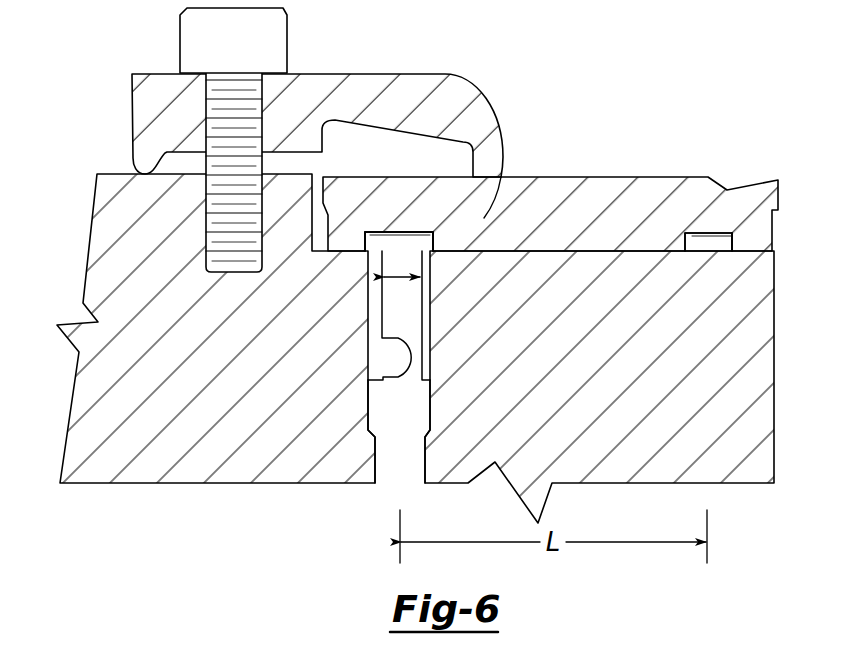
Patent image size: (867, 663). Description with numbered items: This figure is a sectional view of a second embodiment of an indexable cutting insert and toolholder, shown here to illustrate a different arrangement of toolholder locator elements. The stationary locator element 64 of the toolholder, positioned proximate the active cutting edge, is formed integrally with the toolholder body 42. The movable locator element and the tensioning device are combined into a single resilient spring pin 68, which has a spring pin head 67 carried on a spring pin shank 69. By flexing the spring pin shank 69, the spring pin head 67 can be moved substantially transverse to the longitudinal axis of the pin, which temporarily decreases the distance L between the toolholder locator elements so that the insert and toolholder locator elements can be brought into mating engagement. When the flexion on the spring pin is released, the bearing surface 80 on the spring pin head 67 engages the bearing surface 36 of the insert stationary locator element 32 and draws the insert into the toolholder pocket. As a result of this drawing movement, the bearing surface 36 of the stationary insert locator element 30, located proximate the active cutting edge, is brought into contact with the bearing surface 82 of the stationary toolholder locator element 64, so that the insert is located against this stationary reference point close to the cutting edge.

The stationary insert locator element 30 is at (668, 250).
The insert stationary locator element 32 is at (438, 232).
The bearing surface 36 is at (431, 238).
The toolholder body 42 is at (792, 324).
The stationary locator element 64 is at (737, 248).
The spring pin head 67 is at (396, 247).
The resilient spring pin 68 is at (390, 410).
The spring pin shank 69 is at (390, 318).
The bearing surface 80 is at (378, 236).
The bearing surface 82 is at (680, 237).